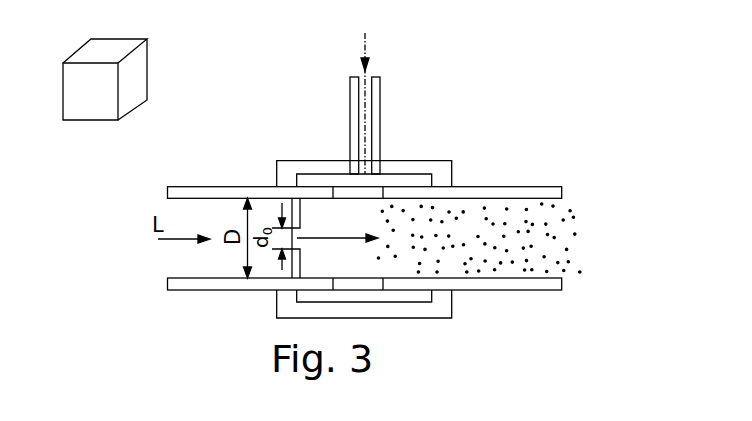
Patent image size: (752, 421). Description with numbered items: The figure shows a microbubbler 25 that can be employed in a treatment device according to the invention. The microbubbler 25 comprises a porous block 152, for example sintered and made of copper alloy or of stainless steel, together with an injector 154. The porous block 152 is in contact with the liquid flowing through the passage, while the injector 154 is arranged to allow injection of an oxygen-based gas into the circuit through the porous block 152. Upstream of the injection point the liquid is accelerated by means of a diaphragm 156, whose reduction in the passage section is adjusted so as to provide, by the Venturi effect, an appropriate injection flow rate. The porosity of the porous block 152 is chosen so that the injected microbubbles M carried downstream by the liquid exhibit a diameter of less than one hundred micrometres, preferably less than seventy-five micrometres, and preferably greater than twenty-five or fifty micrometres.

The mixing apparatus 25 is at (597, 116).
The porous block 152 is at (137, 69).
The injector 154 is at (373, 100).
The diaphragm 156 is at (288, 267).
The microbubbles M is at (502, 217).